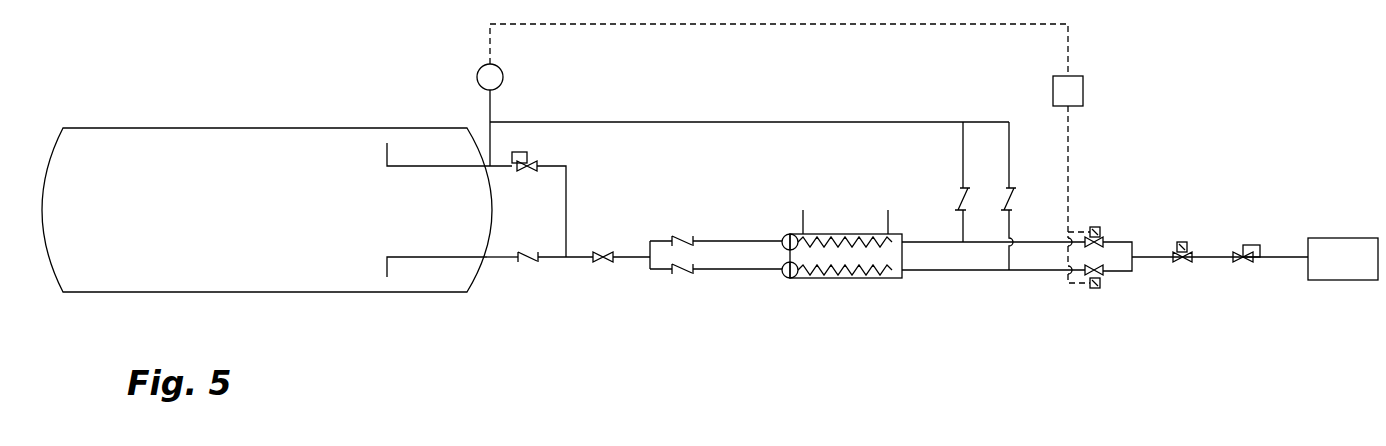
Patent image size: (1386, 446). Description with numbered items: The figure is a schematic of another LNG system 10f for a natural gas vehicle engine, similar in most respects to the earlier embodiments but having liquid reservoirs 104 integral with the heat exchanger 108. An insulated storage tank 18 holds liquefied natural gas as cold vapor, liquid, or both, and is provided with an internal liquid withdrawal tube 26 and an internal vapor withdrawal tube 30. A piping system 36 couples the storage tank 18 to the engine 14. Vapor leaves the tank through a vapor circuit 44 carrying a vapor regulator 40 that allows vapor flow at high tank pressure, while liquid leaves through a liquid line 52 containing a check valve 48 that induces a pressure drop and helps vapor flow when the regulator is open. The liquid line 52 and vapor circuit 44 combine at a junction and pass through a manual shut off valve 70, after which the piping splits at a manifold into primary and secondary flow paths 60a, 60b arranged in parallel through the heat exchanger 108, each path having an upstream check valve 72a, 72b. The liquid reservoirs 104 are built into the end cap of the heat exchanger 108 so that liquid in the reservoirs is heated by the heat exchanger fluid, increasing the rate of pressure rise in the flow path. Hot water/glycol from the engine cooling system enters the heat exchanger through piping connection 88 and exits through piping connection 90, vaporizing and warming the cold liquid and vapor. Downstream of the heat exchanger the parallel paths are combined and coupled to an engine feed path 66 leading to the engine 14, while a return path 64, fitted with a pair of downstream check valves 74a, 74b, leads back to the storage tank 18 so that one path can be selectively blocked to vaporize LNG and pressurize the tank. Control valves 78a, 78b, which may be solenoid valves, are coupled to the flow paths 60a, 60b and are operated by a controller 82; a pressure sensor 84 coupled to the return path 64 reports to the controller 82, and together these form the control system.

The system 10f is at (414, 336).
The engine 14 is at (1320, 238).
The insulated storage tank 18 is at (288, 126).
The internal liquid withdrawal tube 26 is at (385, 276).
The internal vapor withdrawal tube 30 is at (385, 152).
The piping system 36 is at (853, 96).
The vapor regulator 40 is at (527, 151).
The vapor circuit 44 is at (567, 179).
The check valve 48 is at (535, 266).
The liquid line 52 is at (500, 262).
The primary flow path 60a is at (854, 236).
The secondary flow path 60b is at (850, 279).
The return path 64 is at (757, 121).
The engine feed path 66 is at (1137, 286).
The manual shut off valve 70 is at (603, 263).
The upstream check valve 72a is at (690, 236).
The upstream check valve 72b is at (686, 277).
The downstream check valve 74a is at (957, 203).
The downstream check valve 74b is at (1018, 198).
The control valve 78a is at (1093, 226).
The control valve 78b is at (1096, 290).
The controller 82 is at (1085, 92).
The pressure sensor 84 is at (477, 75).
The piping connection 88 is at (800, 215).
The piping connection 90 is at (890, 219).
The liquid reservoir 104 is at (781, 275).
The heat exchanger 108 is at (805, 279).